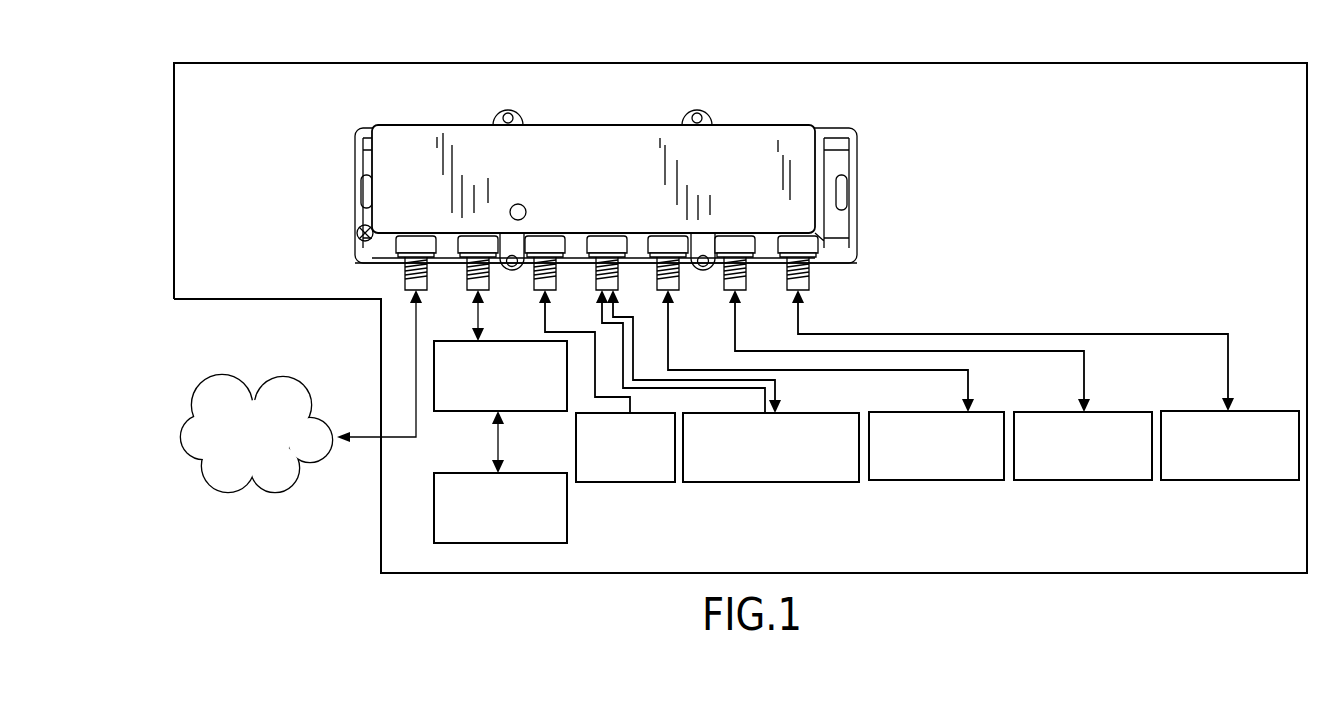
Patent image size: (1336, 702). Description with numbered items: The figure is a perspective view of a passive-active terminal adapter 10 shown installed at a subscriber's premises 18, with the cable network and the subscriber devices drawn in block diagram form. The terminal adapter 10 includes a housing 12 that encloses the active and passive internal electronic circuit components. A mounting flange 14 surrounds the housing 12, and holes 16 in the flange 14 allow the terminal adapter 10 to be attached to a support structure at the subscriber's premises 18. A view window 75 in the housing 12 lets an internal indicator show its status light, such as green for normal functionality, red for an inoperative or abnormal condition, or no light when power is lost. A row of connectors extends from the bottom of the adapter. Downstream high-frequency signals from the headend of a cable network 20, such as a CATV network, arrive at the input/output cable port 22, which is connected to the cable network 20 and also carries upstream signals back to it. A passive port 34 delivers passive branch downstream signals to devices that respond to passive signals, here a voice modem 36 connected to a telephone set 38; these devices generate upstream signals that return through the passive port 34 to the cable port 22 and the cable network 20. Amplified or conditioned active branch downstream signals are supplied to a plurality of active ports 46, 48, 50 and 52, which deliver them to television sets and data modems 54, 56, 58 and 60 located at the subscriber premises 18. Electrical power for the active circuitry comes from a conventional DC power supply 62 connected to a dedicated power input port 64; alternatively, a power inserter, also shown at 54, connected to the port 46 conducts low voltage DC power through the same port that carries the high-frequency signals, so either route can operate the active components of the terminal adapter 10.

The passive-active terminal adapter 10 is at (770, 259).
The housing 12 is at (770, 125).
The mounting flange 14 is at (355, 150).
The holes 16 is at (362, 195).
The subscriber's premises 18 is at (1275, 60).
The cable network 20 is at (223, 490).
The input/output cable port 22 is at (404, 281).
The passive port 34 is at (466, 282).
The voice modem 36 is at (527, 412).
The telephone set 38 is at (433, 493).
The active port 46 is at (617, 282).
The active port 48 is at (676, 281).
The active port 50 is at (746, 283).
The active port 52 is at (810, 282).
The TV/data modem with power inserter 54 is at (722, 483).
The TV/data modem 56 is at (968, 481).
The TV/data modem 58 is at (1078, 481).
The TV/data modem 60 is at (1222, 481).
The DC power supply 62 is at (627, 483).
The power input port 64 is at (552, 281).
The view window 75 is at (526, 207).